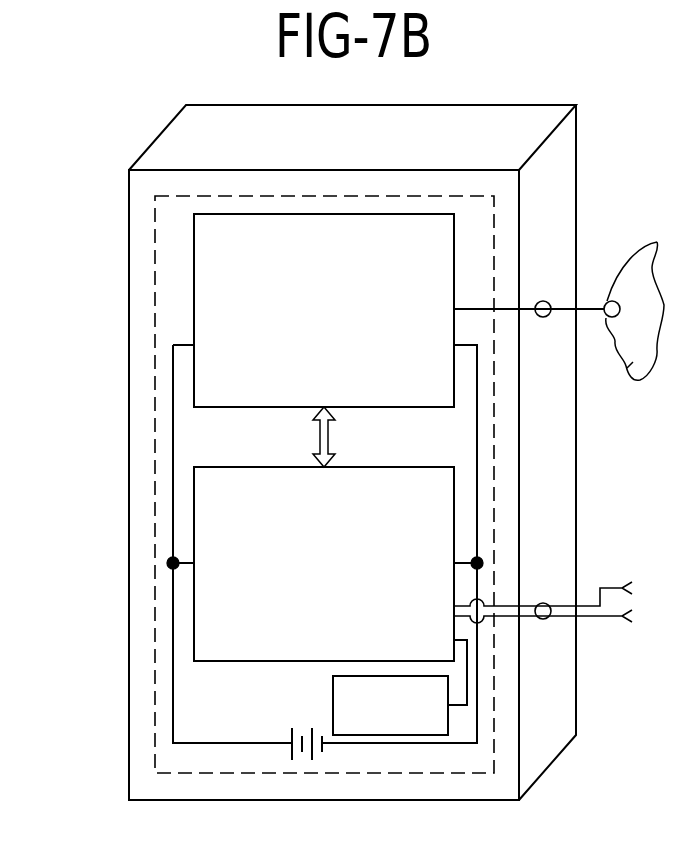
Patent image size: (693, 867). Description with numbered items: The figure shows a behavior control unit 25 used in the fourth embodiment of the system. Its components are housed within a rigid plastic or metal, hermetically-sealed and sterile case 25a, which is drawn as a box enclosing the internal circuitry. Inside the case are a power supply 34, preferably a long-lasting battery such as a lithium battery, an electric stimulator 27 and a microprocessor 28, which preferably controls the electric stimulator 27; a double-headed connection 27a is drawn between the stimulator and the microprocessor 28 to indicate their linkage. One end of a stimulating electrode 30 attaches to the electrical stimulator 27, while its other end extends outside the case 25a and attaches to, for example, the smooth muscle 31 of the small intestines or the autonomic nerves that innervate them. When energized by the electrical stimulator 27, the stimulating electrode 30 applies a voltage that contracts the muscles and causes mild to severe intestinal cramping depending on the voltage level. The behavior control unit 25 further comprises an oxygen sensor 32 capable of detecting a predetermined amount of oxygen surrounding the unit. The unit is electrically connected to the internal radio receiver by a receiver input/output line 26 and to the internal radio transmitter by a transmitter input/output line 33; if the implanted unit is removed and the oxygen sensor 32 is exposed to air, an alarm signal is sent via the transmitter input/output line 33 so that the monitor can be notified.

The behavior control unit 25 is at (532, 125).
The case 25a is at (577, 490).
The receiver input/output line 26 is at (562, 591).
The electric stimulator 27 is at (205, 328).
The bidirectional connection 27a is at (322, 435).
The microprocessor 28 is at (203, 612).
The stimulating electrode 30 is at (587, 309).
The smooth muscle 31 is at (625, 378).
The oxygen sensor 32 is at (442, 715).
The transmitter input/output line 33 is at (562, 616).
The power supply 34 is at (290, 752).